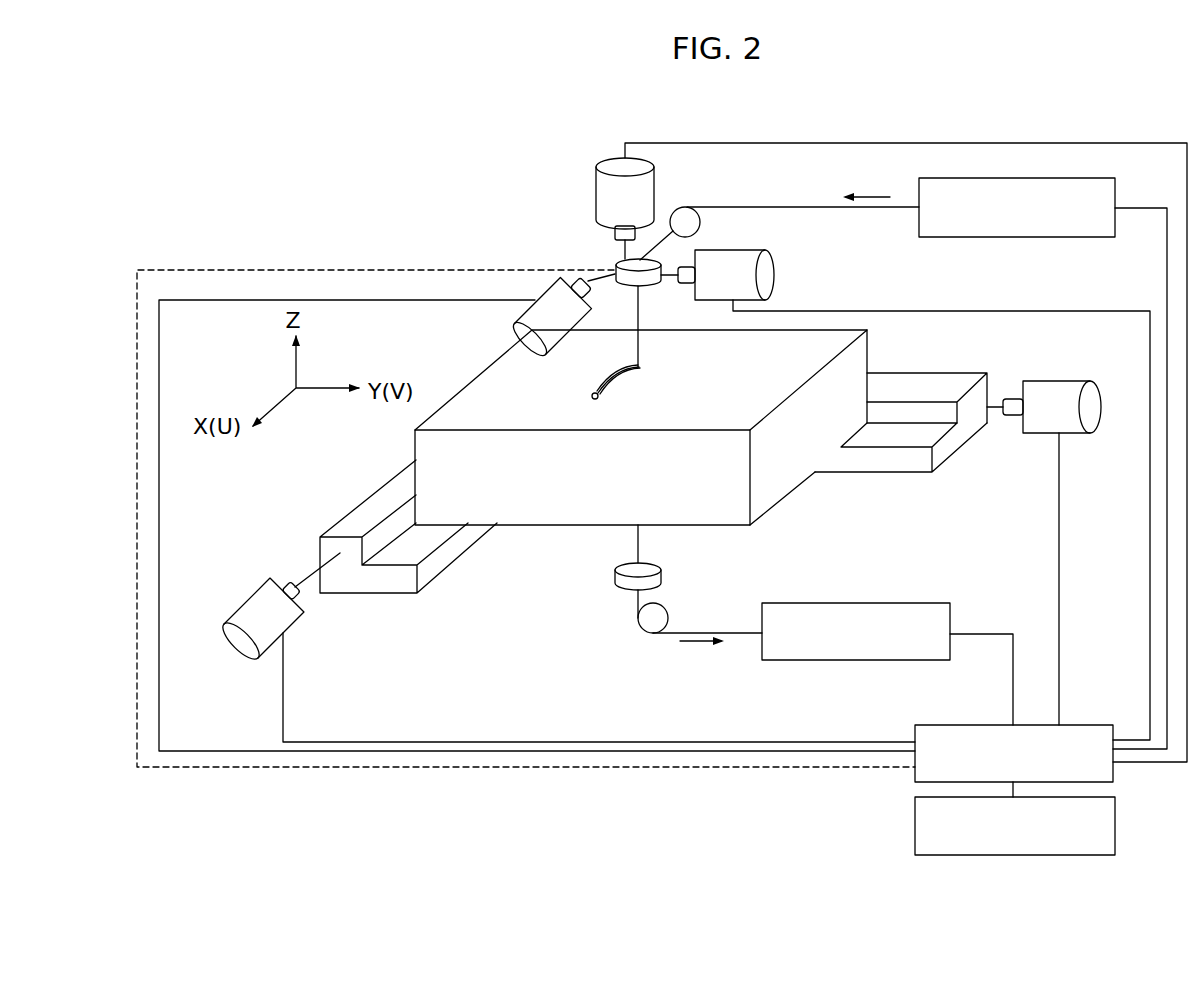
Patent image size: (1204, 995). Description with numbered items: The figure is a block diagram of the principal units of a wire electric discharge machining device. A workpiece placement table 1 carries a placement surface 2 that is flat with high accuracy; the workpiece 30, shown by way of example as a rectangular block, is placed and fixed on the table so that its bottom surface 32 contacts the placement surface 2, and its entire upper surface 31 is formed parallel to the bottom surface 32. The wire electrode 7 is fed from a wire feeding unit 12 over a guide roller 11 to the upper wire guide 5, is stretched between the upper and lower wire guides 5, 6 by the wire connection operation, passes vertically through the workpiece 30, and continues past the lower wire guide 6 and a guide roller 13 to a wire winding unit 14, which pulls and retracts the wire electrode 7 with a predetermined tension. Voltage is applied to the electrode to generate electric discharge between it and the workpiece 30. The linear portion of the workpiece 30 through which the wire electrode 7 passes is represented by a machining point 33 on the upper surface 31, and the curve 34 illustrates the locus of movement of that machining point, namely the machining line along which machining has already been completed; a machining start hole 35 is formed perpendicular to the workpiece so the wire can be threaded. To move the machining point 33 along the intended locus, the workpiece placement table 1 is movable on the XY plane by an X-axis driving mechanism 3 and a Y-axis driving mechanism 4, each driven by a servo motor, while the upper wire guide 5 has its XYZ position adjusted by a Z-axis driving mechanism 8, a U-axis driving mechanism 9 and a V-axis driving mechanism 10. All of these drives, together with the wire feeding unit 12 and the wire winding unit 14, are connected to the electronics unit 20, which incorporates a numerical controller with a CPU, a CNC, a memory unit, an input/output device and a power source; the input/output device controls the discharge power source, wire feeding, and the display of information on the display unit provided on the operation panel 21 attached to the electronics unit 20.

The workpiece placement table 1 is at (941, 482).
The placement surface 2 is at (913, 426).
The X-axis driving mechanism 3 is at (298, 626).
The Y-axis driving mechanism 4 is at (1067, 382).
The upper wire guide 5 is at (616, 263).
The lower wire guide 6 is at (662, 571).
The wire electrode 7 is at (641, 318).
The Z-axis driving mechanism 8 is at (596, 185).
The U-axis driving mechanism 9 is at (512, 322).
The V-axis driving mechanism 10 is at (758, 252).
The guide roller 11 is at (702, 224).
The wire feeding unit 12 is at (1039, 238).
The guide roller 13 is at (668, 617).
The wire winding unit 14 is at (897, 603).
The electronics unit 20 is at (1095, 724).
The operation panel 21 is at (1116, 822).
The workpiece 30 is at (780, 483).
The upper surface 31 is at (818, 340).
The bottom surface 32 is at (544, 508).
The machining point 33 is at (648, 366).
The locus of movement of the machining point 34 is at (612, 383).
The machining start hole 35 is at (591, 396).